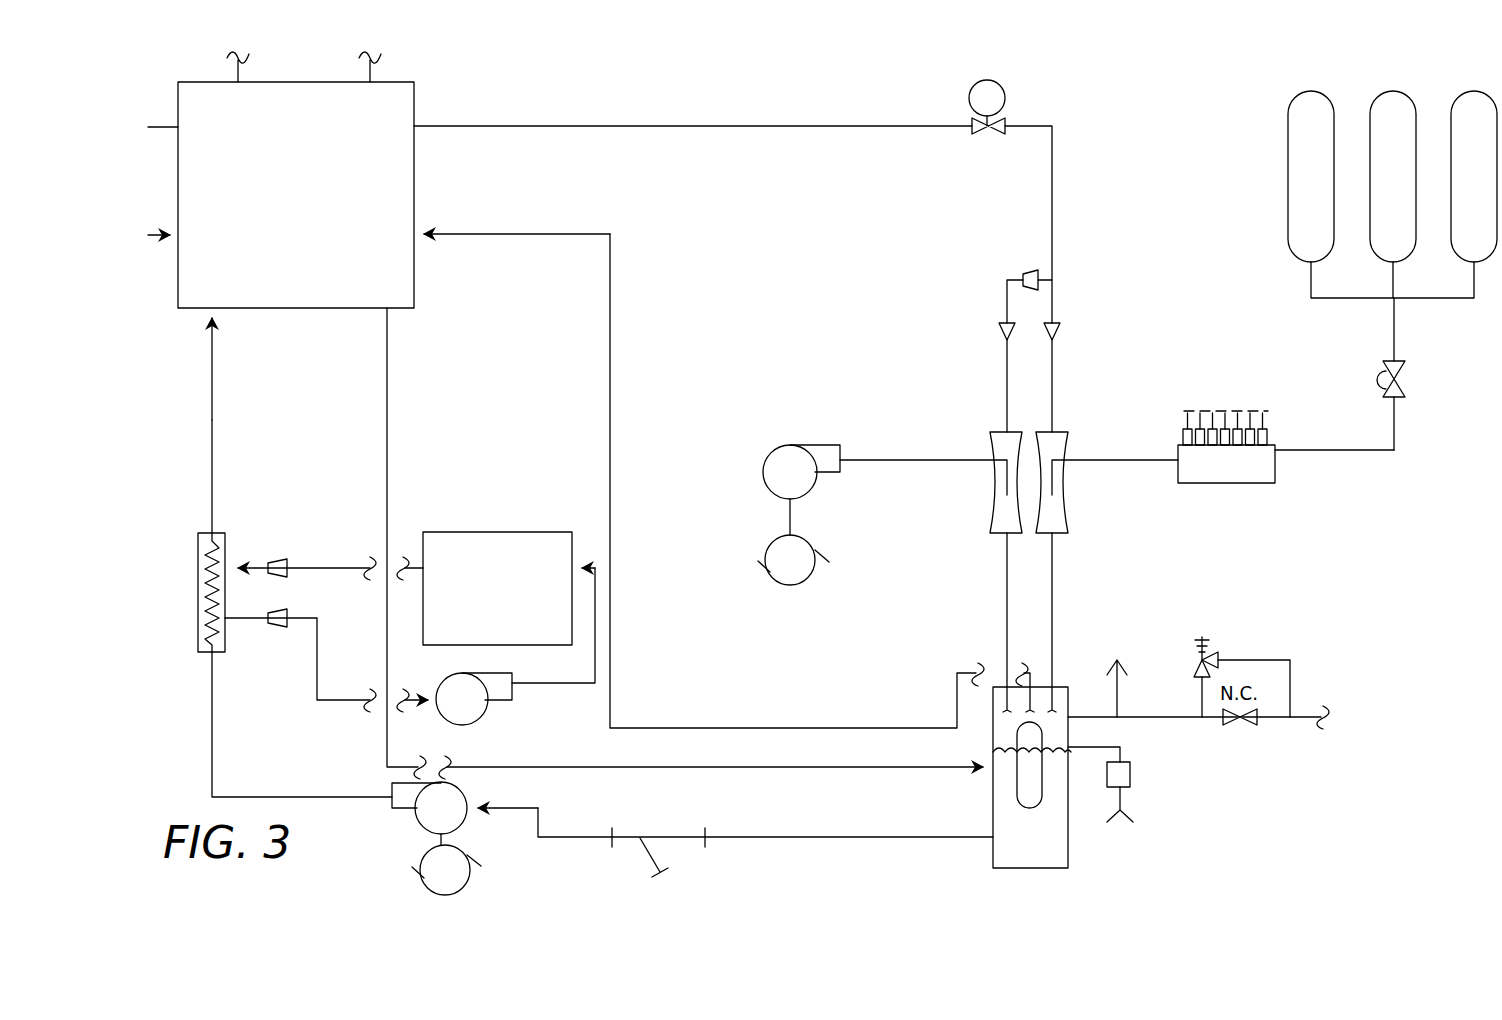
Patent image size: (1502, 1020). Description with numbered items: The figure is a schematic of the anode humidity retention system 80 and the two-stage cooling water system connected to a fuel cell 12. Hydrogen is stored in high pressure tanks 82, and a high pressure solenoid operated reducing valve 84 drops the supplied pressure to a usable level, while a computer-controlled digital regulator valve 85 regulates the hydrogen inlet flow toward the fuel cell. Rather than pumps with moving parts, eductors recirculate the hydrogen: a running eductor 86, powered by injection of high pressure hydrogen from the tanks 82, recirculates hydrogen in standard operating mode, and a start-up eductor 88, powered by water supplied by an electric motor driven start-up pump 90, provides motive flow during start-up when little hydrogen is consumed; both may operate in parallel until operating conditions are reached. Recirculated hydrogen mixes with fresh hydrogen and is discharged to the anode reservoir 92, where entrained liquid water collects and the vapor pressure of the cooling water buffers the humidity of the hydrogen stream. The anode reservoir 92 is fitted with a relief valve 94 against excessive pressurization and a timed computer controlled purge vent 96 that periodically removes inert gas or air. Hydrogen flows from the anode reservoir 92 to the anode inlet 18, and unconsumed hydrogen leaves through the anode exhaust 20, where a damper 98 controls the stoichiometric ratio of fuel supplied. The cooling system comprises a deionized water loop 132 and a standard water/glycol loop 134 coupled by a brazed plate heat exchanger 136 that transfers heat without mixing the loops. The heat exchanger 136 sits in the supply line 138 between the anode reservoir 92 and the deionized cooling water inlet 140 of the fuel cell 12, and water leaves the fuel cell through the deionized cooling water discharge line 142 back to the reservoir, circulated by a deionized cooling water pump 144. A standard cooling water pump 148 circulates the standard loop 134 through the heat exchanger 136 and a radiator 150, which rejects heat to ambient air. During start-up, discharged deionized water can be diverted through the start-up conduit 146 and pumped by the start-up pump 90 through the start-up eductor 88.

The fuel cell 12 is at (393, 93).
The anode inlet 18 is at (413, 233).
The anode exhaust 20 is at (413, 128).
The anode humidity retention system 80 is at (580, 58).
The tanks 82 is at (1288, 254).
The high pressure solenoid operated reducing valve 84 is at (1405, 382).
The computer-controlled digital regulator valve 85 is at (1219, 486).
The running eductor 86 is at (1067, 532).
The start-up eductor 88 is at (988, 532).
The start-up pump 90 is at (768, 462).
The anode reservoir 92 is at (1065, 858).
The relief valve 94 is at (1198, 650).
The purge vent 96 is at (1303, 712).
The damper 98 is at (1005, 115).
The deionized water loop 132 is at (200, 748).
The standard water/glycol loop 134 is at (304, 699).
The brazed plate heat exchanger 136 is at (197, 580).
The supply line 138 is at (208, 447).
The deionized cooling water inlet 140 is at (210, 307).
The deionized cooling water discharge line 142 is at (387, 475).
The deionized cooling water pump 144 is at (463, 825).
The start-up conduit 146 is at (535, 235).
The standard cooling water pump 148 is at (478, 718).
The radiator 150 is at (543, 530).